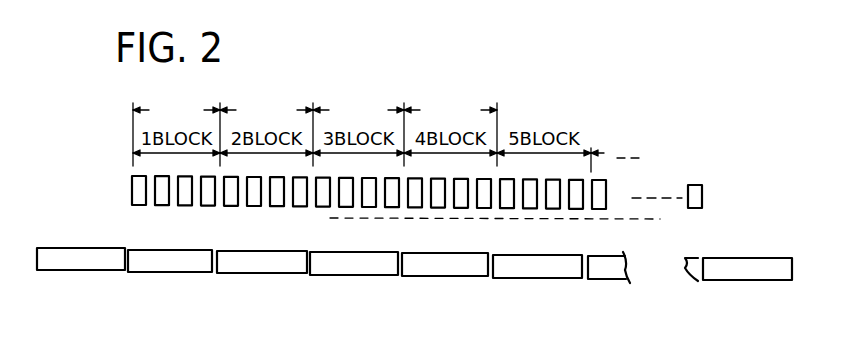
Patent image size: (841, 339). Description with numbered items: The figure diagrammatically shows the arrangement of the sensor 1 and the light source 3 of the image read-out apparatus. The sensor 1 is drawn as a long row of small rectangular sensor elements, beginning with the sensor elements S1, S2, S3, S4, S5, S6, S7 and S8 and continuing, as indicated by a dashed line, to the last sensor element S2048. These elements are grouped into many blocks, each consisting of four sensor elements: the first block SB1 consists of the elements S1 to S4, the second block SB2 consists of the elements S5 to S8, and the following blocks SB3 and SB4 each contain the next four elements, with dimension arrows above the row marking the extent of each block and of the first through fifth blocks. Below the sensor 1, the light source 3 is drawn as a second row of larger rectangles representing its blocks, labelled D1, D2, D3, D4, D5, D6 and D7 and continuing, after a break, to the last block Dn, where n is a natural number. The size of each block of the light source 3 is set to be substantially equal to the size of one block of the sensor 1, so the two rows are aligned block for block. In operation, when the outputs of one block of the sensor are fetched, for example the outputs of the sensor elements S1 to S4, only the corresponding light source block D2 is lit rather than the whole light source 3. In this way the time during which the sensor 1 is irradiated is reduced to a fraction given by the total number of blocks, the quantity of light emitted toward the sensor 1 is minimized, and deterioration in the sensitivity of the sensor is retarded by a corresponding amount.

The sensor 1 is at (424, 190).
The light source 3 is at (414, 288).
The sensor element S1 is at (136, 201).
The sensor element S2 is at (159, 201).
The sensor element S3 is at (182, 201).
The sensor element S4 is at (205, 201).
The sensor element S5 is at (228, 201).
The sensor element S6 is at (251, 201).
The sensor element S7 is at (274, 201).
The sensor element S8 is at (297, 201).
The sensor element S2048 is at (699, 209).
The sensor block SB1 is at (176, 110).
The sensor block SB2 is at (266, 110).
The sensor block SB3 is at (358, 110).
The sensor block SB4 is at (450, 110).
The light source block D1 is at (81, 270).
The light source block D2 is at (170, 271).
The light source block D3 is at (262, 272).
The light source block D4 is at (354, 274).
The light source block D5 is at (445, 275).
The light source block D6 is at (537, 276).
The light source block D7 is at (609, 275).
The light source block Dn is at (738, 279).